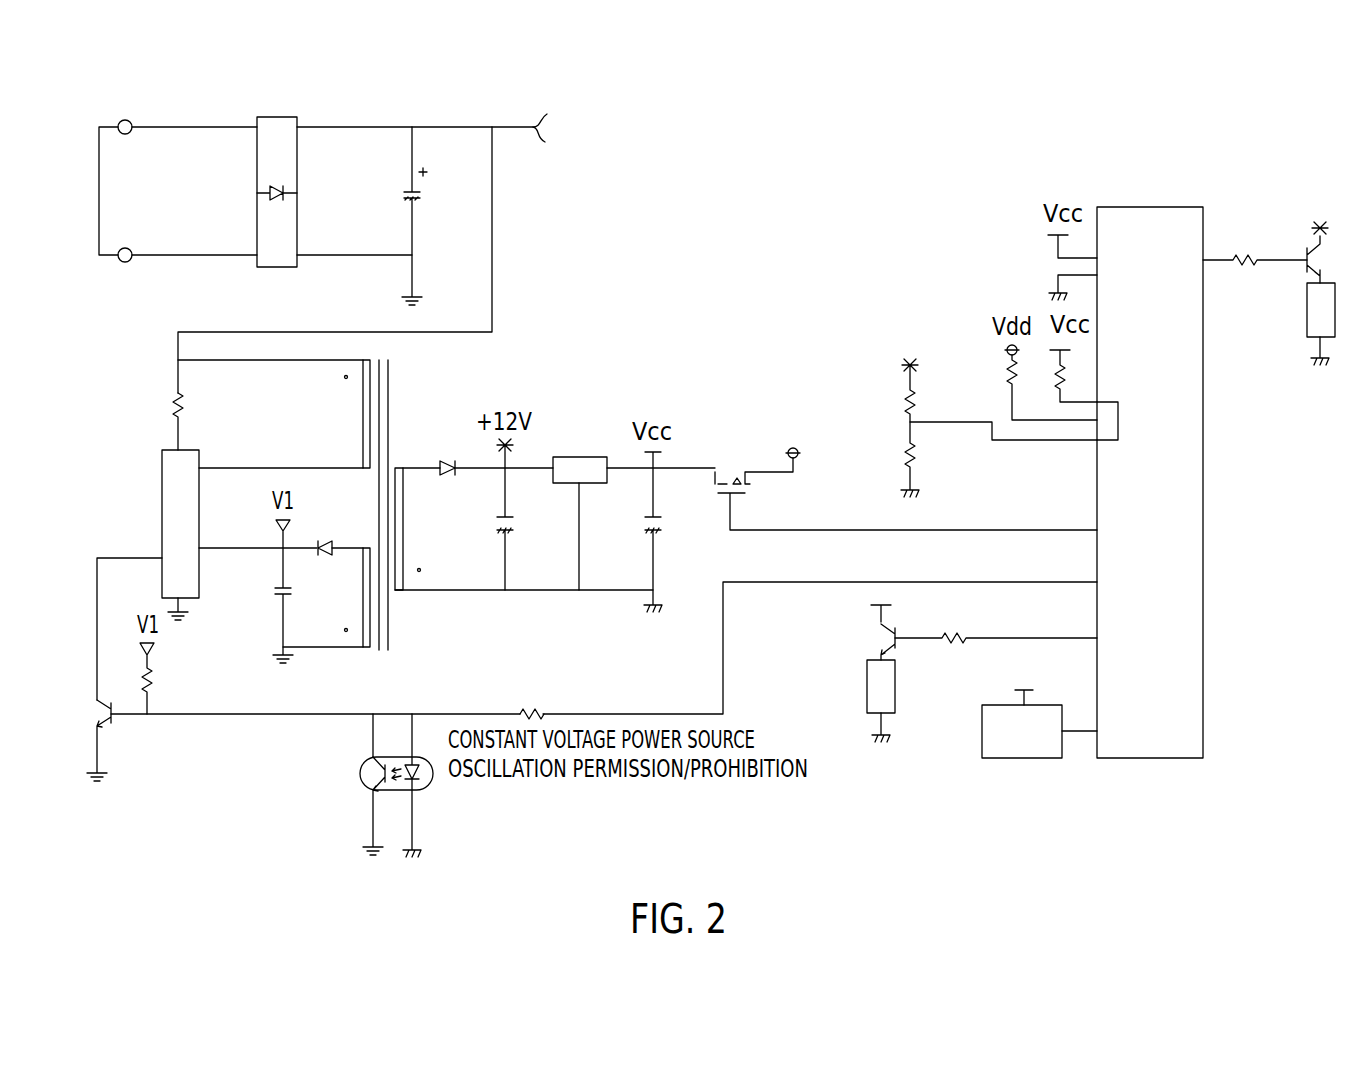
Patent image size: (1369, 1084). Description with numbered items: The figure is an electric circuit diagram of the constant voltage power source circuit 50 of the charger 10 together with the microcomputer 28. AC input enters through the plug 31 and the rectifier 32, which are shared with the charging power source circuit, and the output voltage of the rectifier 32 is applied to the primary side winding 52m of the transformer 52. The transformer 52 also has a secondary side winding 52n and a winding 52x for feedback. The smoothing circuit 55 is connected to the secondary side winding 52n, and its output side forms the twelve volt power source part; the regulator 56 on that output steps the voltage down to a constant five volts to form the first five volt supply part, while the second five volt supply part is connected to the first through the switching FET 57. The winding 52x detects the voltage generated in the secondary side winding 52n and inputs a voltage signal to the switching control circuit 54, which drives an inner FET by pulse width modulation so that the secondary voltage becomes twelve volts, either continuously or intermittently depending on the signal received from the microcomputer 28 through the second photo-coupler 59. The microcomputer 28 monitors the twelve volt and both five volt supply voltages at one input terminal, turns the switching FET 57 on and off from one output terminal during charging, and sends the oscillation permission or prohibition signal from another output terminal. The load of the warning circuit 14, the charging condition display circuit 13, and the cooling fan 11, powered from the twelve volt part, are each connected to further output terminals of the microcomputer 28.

The charger 10 is at (796, 269).
The cooling fan 11 is at (1330, 312).
The charging condition display circuit 13 is at (982, 727).
The load of the warning circuit 14 is at (867, 692).
The microcomputer 28 is at (1208, 488).
The plug 31 is at (99, 177).
The rectifier 32 is at (279, 128).
The constant voltage power source circuit 50 is at (542, 346).
The transformer 52 is at (401, 619).
The primary side winding 52m is at (365, 468).
The secondary side winding 52n is at (397, 592).
The winding for feedback 52x is at (366, 648).
The switching control circuit 54 is at (162, 490).
The smoothing circuit 55 is at (479, 481).
The regulator 56 is at (583, 458).
The switching FET 57 is at (737, 470).
The second photo-coupler 59 is at (360, 773).